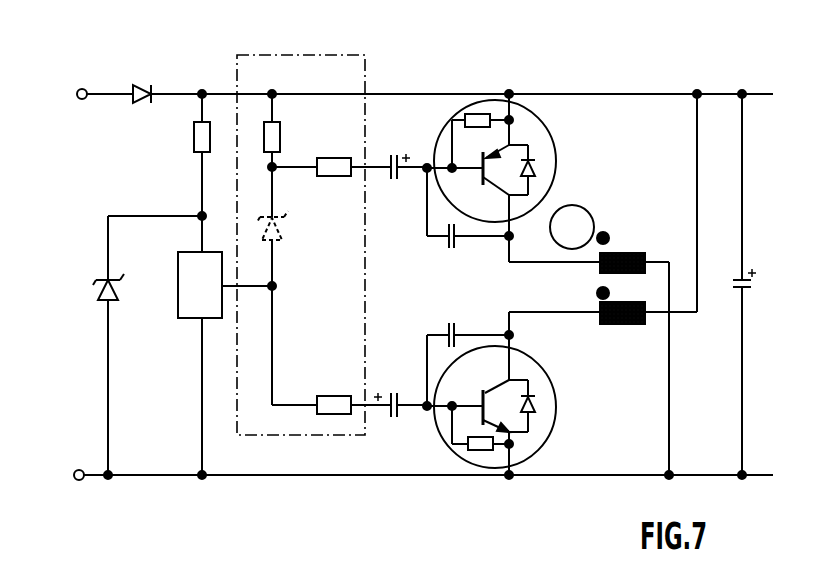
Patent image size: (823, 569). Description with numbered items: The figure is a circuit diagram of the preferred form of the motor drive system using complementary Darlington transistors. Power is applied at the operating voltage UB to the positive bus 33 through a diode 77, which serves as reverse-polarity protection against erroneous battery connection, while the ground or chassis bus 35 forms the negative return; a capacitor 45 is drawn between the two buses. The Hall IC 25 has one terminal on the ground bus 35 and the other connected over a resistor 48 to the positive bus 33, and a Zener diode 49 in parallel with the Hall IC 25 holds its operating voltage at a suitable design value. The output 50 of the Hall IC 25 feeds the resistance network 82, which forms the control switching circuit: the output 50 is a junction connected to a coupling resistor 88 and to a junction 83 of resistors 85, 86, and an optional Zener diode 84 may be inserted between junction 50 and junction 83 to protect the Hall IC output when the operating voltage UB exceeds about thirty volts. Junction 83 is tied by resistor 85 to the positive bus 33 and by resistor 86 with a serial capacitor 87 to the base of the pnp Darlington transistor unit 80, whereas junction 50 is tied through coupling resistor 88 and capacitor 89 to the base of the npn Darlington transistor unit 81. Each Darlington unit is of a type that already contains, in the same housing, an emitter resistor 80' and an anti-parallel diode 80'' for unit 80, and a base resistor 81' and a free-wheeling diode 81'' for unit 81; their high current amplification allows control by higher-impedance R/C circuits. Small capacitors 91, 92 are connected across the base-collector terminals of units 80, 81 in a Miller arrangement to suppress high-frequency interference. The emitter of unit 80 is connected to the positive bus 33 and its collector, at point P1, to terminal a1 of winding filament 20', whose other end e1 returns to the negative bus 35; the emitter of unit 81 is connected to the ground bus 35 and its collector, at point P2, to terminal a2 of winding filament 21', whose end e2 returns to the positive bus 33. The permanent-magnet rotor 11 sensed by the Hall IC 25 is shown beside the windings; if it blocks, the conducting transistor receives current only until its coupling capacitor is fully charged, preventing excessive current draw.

The positive bus 33 is at (383, 94).
The ground bus 35 is at (576, 477).
The diode 77 is at (146, 87).
The resistor 48 is at (194, 137).
The Zener diode 49 is at (116, 290).
The Hall IC 25 is at (210, 317).
The resistance network 82 is at (298, 62).
The resistor 85 is at (278, 138).
The junction 83 is at (276, 170).
The resistor 86 is at (338, 176).
The capacitor 87 is at (394, 182).
The Zener diode 84 is at (285, 234).
The output 50 is at (277, 287).
The coupling resistor 88 is at (332, 396).
The capacitor 89 is at (394, 392).
The pnp Darlington transistor unit 80 is at (507, 144).
The emitter resistor 80' is at (482, 108).
The anti-parallel connected diode 80'' is at (563, 170).
The npn Darlington transistor unit 81 is at (508, 401).
The base resistor 81' is at (482, 459).
The free-wheeling diode 81'' is at (565, 406).
The capacitor 91 is at (447, 241).
The capacitor 92 is at (447, 323).
The rotor 11 is at (577, 210).
The winding filament 20' is at (635, 240).
The winding filament 21' is at (631, 337).
The capacitor 45 is at (749, 290).
The first connection point P1 is at (505, 263).
The second connection point P2 is at (506, 312).
The terminal a1 is at (596, 265).
The winding end 20' e1 is at (646, 259).
The terminal a2 is at (598, 307).
The winding end 21' e2 is at (644, 310).
The operating voltage UB is at (90, 76).